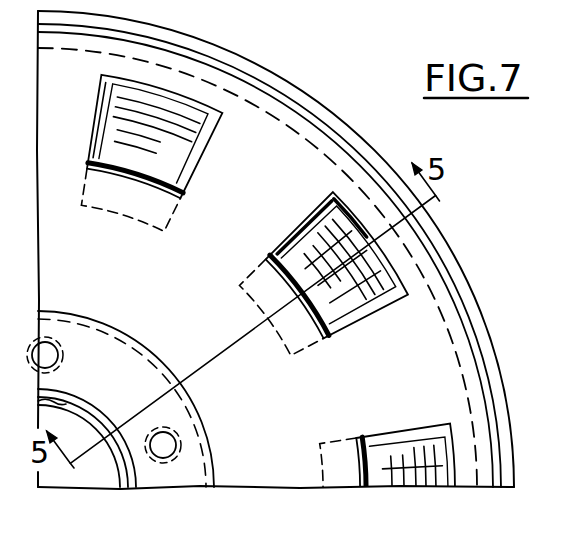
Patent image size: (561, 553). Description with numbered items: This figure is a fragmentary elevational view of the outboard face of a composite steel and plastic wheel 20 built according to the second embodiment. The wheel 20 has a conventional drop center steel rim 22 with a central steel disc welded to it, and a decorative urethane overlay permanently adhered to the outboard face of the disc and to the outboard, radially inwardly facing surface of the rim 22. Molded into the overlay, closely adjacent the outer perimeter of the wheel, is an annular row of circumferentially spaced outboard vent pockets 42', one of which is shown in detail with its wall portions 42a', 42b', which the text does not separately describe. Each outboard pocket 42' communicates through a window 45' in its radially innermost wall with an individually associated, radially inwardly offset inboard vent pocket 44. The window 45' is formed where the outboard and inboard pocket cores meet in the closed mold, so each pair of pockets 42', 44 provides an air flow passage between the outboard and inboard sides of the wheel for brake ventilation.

The wheel 20 is at (246, 41).
The drop center steel rim 22 is at (303, 90).
The outboard vent pockets 42' is at (337, 247).
The slot side wall 42a' is at (308, 214).
The slot side wall 42b' is at (281, 229).
The inboard vent pockets 44 is at (333, 363).
The window 45' is at (345, 299).